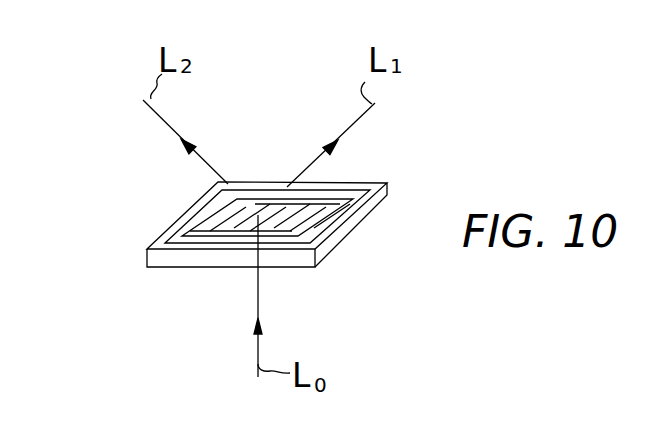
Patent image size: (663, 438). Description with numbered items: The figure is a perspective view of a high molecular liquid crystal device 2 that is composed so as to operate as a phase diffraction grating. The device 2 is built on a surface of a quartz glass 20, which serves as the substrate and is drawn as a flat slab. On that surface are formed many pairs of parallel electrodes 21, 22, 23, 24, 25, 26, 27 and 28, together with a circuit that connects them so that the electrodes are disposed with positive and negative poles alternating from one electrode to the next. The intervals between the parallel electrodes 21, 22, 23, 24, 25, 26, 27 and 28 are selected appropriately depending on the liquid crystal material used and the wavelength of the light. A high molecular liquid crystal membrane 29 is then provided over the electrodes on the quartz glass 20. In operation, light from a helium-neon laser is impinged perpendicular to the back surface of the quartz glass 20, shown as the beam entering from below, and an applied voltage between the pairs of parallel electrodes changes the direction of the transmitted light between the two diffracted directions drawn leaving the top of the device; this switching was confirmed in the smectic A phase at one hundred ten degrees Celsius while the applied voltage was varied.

The high molecular liquid crystal device 2 is at (412, 160).
The quartz glass 20 is at (148, 260).
The parallel electrode 21 is at (335, 222).
The parallel electrode 22 is at (332, 205).
The parallel electrode 23 is at (302, 205).
The parallel electrode 24 is at (270, 228).
The parallel electrode 25 is at (272, 210).
The parallel electrode 26 is at (243, 233).
The parallel electrode 27 is at (218, 208).
The parallel electrode 28 is at (207, 235).
The high molecular liquid crystal membrane 29 is at (177, 226).